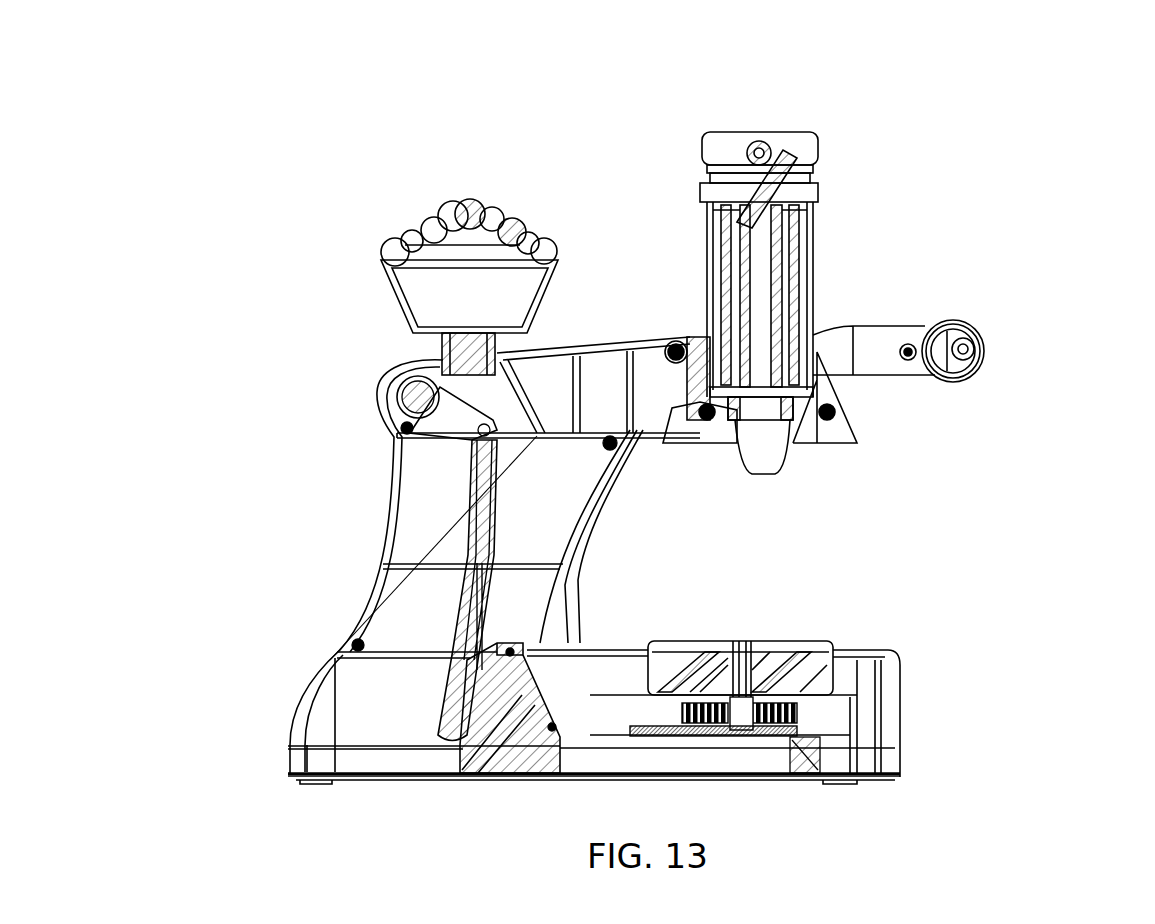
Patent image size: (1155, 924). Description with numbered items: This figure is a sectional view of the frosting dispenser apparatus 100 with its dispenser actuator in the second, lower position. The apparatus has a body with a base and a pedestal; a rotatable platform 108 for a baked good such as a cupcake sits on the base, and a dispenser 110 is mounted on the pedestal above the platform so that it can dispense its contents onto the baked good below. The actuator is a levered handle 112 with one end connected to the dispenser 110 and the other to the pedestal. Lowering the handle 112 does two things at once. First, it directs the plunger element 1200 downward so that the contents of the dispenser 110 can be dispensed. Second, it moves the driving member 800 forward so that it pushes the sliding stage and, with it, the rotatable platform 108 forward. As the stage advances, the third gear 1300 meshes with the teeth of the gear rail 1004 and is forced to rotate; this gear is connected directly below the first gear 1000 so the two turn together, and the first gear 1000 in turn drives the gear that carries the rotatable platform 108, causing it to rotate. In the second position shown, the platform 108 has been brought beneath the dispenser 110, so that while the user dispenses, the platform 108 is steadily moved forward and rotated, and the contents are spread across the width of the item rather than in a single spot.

The frosting dispenser apparatus 100 is at (201, 121).
The rotatable platform 108 is at (745, 645).
The dispenser 110 is at (817, 260).
The handle 112 is at (985, 343).
The driving member 800 is at (450, 603).
The first gear 1000 is at (805, 718).
The gear rail 1004 is at (640, 727).
The plunger element 1200 is at (767, 300).
The third gear 1300 is at (747, 723).